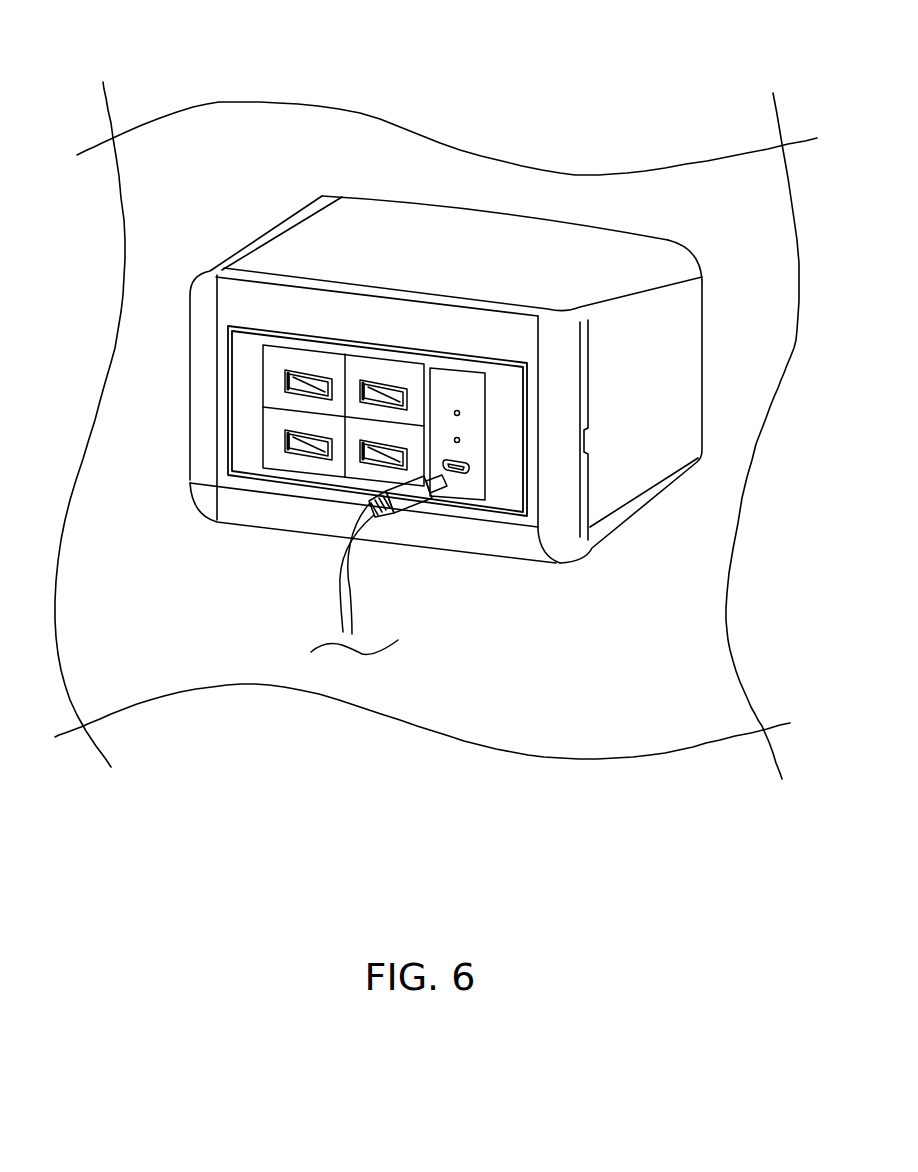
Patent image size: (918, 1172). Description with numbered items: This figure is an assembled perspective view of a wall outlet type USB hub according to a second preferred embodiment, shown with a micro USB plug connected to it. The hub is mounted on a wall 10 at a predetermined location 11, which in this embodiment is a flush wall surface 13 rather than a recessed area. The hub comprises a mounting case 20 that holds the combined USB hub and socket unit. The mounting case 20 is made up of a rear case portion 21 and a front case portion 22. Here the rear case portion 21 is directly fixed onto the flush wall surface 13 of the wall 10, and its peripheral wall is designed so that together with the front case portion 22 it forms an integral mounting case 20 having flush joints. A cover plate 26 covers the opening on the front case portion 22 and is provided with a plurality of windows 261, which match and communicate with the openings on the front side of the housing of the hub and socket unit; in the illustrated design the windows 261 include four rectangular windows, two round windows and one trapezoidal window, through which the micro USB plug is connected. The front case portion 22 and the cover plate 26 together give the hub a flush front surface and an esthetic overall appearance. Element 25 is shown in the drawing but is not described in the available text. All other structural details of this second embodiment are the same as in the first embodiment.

The wall 10 is at (138, 167).
The predetermined location 11 is at (427, 207).
The flush wall surface 13 is at (580, 217).
The mounting case 20 is at (260, 169).
The rear case portion 21 is at (700, 422).
The front case portion 22 is at (187, 403).
The front frame 25 is at (203, 472).
The cover plate 26 is at (243, 460).
The windows 261 is at (313, 455).